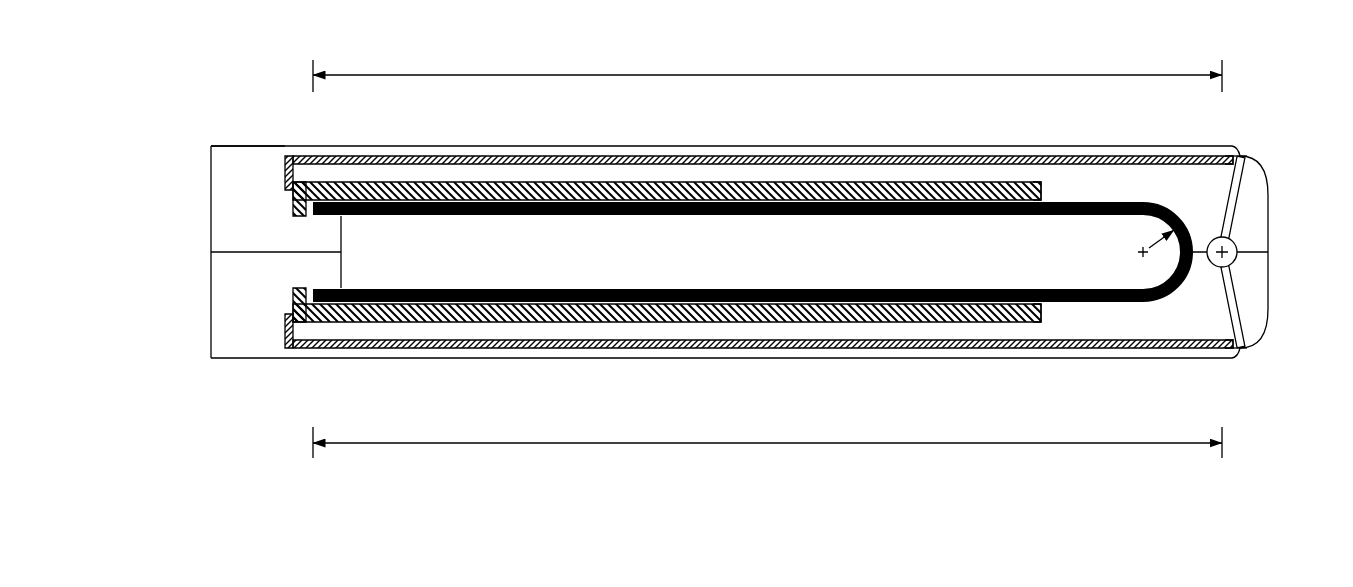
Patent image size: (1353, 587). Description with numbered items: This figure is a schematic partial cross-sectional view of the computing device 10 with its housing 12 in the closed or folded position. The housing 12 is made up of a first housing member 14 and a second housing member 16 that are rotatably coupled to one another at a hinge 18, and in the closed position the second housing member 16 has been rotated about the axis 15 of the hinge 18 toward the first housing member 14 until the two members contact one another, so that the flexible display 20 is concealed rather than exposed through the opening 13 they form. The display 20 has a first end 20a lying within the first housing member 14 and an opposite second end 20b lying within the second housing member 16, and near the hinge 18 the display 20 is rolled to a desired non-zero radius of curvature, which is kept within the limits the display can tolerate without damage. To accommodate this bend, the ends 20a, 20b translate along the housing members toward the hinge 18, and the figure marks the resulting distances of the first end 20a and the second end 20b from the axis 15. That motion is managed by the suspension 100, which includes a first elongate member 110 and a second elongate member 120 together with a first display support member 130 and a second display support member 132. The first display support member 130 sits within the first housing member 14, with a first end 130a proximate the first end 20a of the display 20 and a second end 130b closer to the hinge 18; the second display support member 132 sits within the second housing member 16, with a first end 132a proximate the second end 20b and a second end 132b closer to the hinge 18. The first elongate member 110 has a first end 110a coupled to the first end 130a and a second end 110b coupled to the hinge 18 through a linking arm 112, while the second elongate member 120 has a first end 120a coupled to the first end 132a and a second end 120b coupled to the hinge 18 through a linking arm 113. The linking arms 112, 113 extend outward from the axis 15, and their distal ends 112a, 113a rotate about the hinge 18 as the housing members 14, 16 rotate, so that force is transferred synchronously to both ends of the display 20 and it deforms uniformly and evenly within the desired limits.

The computing device 10 is at (218, 80).
The housing 12 is at (209, 209).
The opening 13 is at (368, 272).
The first housing member 14 is at (211, 268).
The axis 15 is at (1224, 254).
The second housing member 16 is at (211, 158).
The hinge 18 is at (1237, 245).
The flexible display 20 is at (723, 217).
The first end 20a is at (313, 308).
The second end 20b is at (313, 198).
The suspension 100 is at (472, 149).
The first elongate member 110 is at (716, 359).
The first end 110a is at (283, 346).
The second end 110b is at (1235, 350).
The linking arm 112 is at (1240, 305).
The distal end 112a is at (1247, 349).
The linking arm 113 is at (1240, 200).
The distal end 113a is at (1247, 155).
The second elongate member 120 is at (612, 157).
The first end 120a is at (283, 155).
The second end 120b is at (1235, 155).
The first display support member 130 is at (818, 323).
The first end 130a is at (287, 297).
The second end 130b is at (1049, 322).
The second display support member 132 is at (716, 183).
The first end 132a is at (288, 207).
The second end 132b is at (1049, 185).